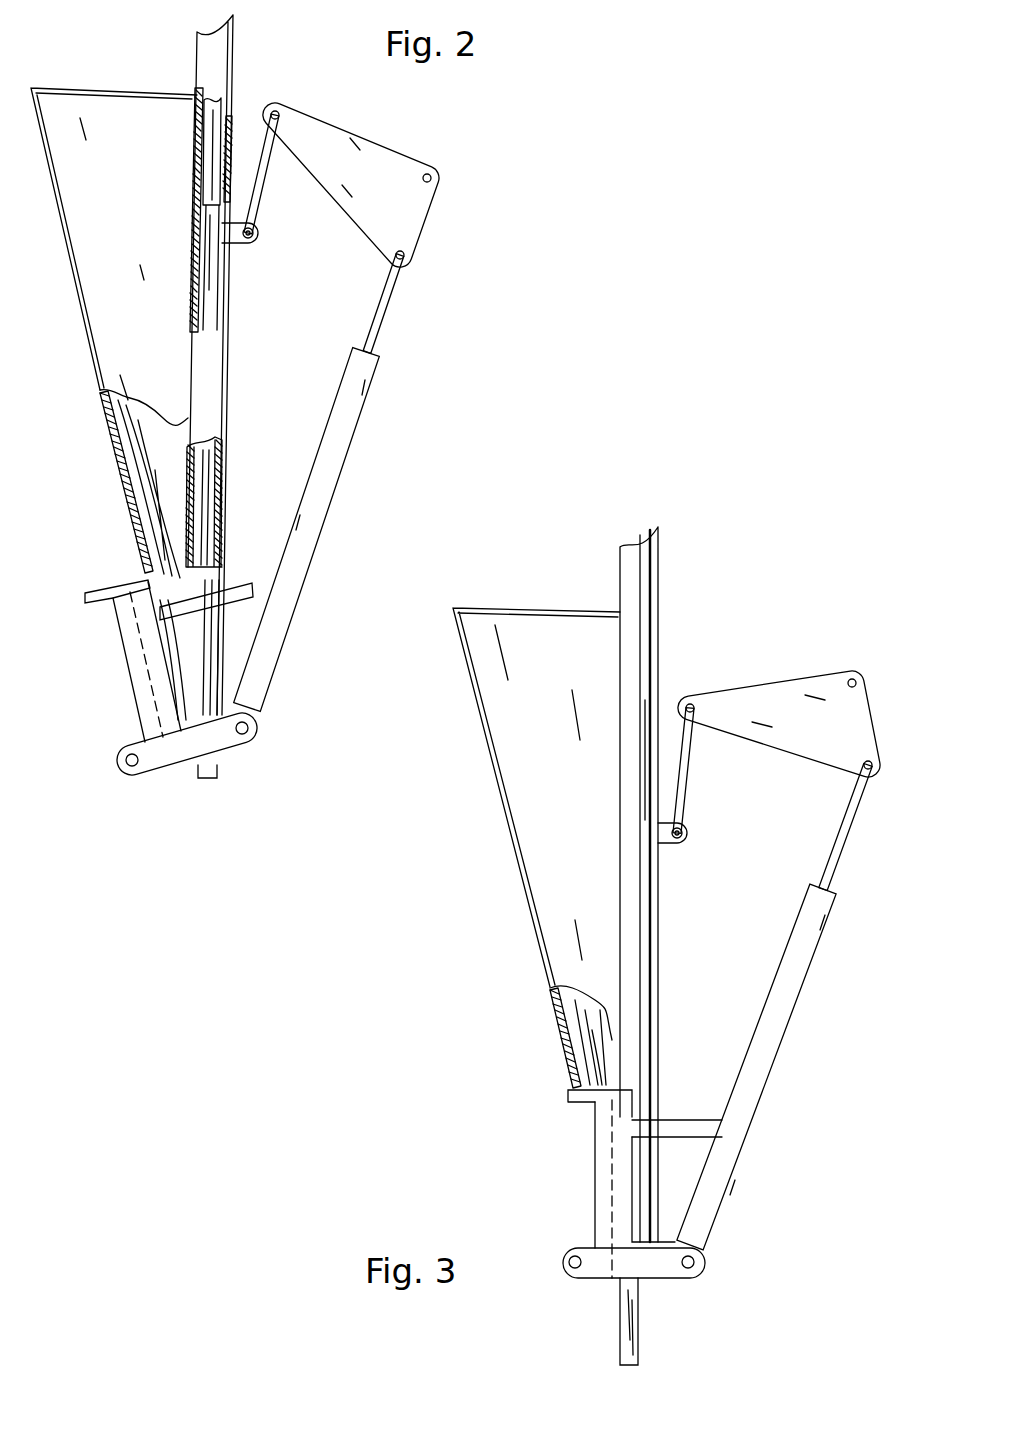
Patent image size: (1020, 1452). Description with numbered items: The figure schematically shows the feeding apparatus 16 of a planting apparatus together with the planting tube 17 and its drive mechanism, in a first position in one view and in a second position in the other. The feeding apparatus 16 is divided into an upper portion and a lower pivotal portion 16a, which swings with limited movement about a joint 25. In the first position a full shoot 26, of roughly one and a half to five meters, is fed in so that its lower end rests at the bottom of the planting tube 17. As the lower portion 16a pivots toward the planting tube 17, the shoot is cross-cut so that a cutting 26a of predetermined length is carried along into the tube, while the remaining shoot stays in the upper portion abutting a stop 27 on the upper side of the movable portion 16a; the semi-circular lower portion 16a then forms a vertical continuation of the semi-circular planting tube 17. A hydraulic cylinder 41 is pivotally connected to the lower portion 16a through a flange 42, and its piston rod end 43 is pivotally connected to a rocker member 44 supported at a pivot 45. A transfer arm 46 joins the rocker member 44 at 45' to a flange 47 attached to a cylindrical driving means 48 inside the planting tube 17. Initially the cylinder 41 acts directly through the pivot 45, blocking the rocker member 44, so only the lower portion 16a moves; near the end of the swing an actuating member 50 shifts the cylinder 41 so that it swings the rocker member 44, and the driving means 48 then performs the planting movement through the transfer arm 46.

In FIG. 2, the feeding apparatus 16 is at (139, 241).
In FIG. 3, the feeding apparatus 16 is at (573, 789).
In FIG. 2, the lower pivotal portion 16a is at (148, 690).
In FIG. 3, the lower pivotal portion 16a is at (598, 1195).
In FIG. 2, the planting tube 17 is at (208, 368).
In FIG. 3, the planting tube 17 is at (652, 888).
In FIG. 2, the joint 25 is at (129, 755).
In FIG. 3, the joint 25 is at (572, 1255).
In FIG. 2, the full shoot 26 is at (152, 512).
In FIG. 3, the full shoot 26 is at (580, 1038).
In FIG. 3, the cutting 26a is at (625, 1335).
In FIG. 2, the stop 27 is at (100, 592).
In FIG. 3, the stop 27 is at (585, 1100).
In FIG. 2, the hydraulic cylinder 41 is at (335, 482).
In FIG. 3, the hydraulic cylinder 41 is at (745, 1117).
In FIG. 2, the flange 42 is at (218, 740).
In FIG. 3, the flange 42 is at (655, 1268).
In FIG. 2, the piston rod end 43 is at (410, 257).
In FIG. 3, the piston rod end 43 is at (871, 772).
In FIG. 2, the rocker member 44 is at (386, 199).
In FIG. 3, the rocker member 44 is at (813, 738).
In FIG. 2, the pivot 45 is at (452, 162).
In FIG. 3, the pivot 45 is at (878, 670).
In FIG. 2, the pivotal connection 45' is at (295, 92).
In FIG. 3, the pivotal connection 45' is at (706, 682).
In FIG. 2, the transfer arm 46 is at (257, 207).
In FIG. 3, the transfer arm 46 is at (688, 760).
In FIG. 2, the flange 47 is at (256, 238).
In FIG. 3, the flange 47 is at (684, 838).
In FIG. 2, the cylindrical driving means 48 is at (212, 283).
In FIG. 2, the actuating member 50 is at (228, 593).
In FIG. 3, the actuating member 50 is at (670, 1122).